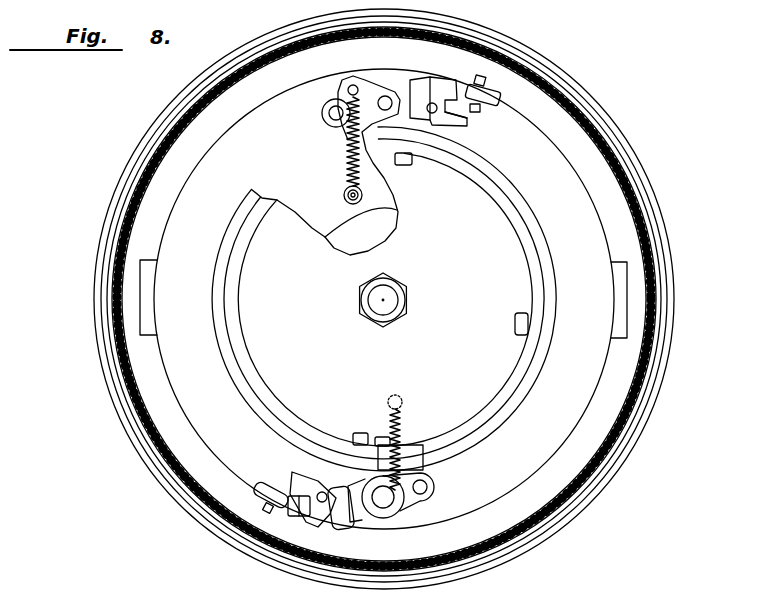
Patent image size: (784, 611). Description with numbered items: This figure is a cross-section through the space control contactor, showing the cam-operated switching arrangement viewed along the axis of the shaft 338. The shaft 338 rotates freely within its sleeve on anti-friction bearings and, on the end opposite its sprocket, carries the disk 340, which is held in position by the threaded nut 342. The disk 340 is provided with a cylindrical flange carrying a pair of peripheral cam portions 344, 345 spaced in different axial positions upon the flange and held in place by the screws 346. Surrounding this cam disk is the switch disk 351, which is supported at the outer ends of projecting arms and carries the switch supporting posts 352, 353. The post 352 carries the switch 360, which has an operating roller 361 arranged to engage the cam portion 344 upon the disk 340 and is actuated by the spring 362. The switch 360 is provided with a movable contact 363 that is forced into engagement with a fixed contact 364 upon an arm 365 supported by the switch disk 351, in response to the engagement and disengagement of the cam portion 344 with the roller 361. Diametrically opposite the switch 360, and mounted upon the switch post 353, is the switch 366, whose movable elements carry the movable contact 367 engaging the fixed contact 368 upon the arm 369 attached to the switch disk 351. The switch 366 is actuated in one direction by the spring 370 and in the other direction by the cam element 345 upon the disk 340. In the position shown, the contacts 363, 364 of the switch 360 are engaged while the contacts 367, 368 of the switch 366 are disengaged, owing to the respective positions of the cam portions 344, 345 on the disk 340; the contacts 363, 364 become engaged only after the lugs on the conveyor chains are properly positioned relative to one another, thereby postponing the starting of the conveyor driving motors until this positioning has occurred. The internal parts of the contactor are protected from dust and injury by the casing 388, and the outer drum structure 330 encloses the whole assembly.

The brake drum 330 is at (650, 183).
The casing 388 is at (653, 340).
The switch disk 351 is at (197, 435).
The disk 340 is at (515, 357).
The cam portion 345 is at (537, 383).
The screws 346 is at (405, 166).
The threaded nut 342 is at (397, 318).
The shaft 338 is at (378, 318).
The spring 370 is at (344, 180).
The switch supporting post 353 is at (327, 120).
The switch 366 is at (428, 78).
The movable contact 367 is at (468, 126).
The fixed contact 368 is at (478, 110).
The arm 369 is at (497, 96).
The cam portion 344 is at (425, 460).
The spring 362 is at (402, 413).
The operating roller 361 is at (400, 506).
The switch supporting post 352 is at (430, 487).
The switch 360 is at (350, 525).
The movable contact 363 is at (300, 475).
The fixed contact 364 is at (287, 492).
The arm 365 is at (264, 494).